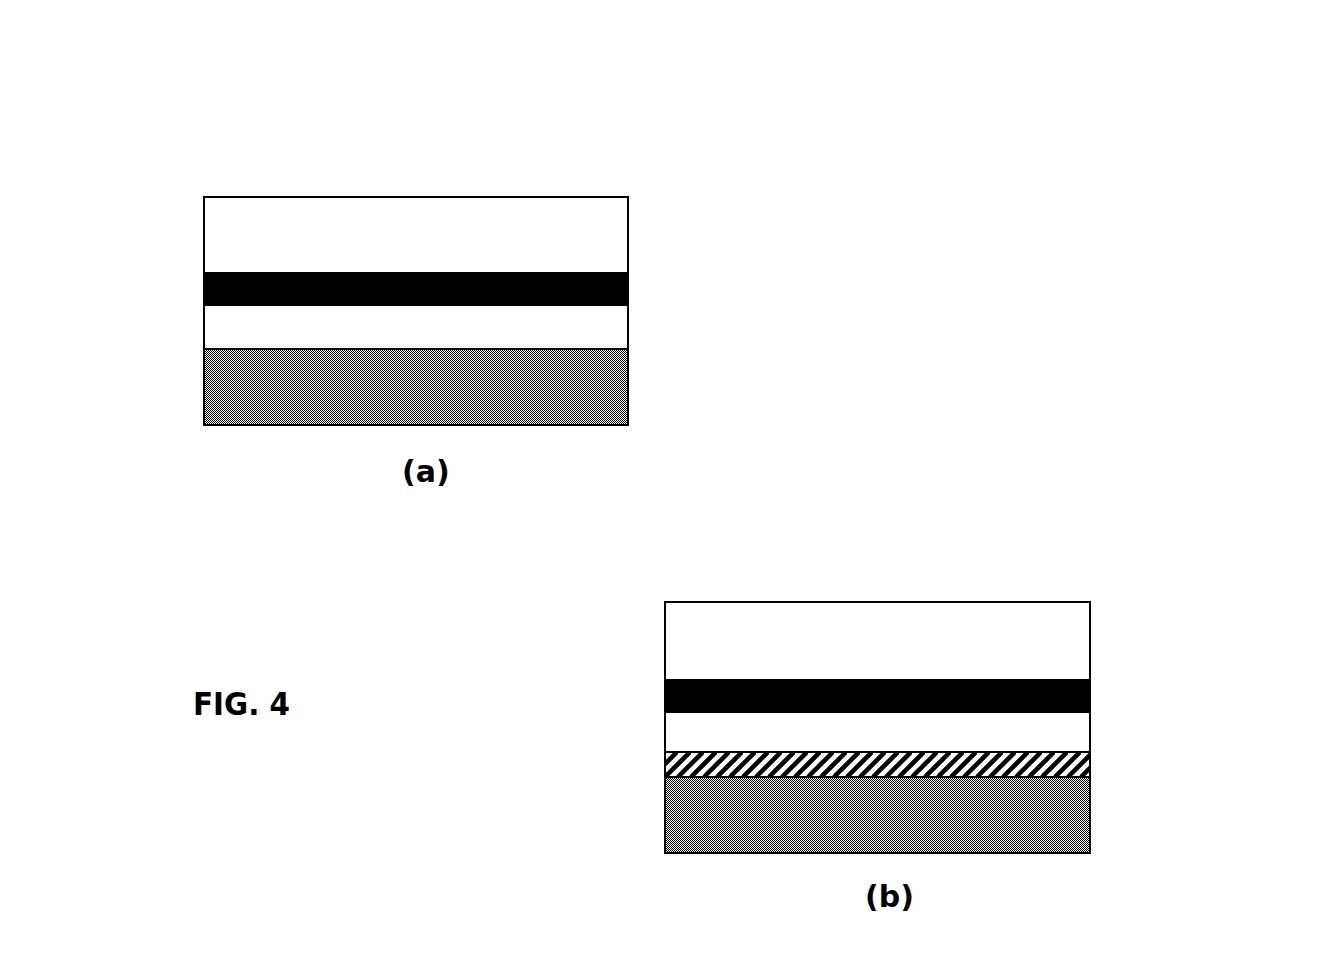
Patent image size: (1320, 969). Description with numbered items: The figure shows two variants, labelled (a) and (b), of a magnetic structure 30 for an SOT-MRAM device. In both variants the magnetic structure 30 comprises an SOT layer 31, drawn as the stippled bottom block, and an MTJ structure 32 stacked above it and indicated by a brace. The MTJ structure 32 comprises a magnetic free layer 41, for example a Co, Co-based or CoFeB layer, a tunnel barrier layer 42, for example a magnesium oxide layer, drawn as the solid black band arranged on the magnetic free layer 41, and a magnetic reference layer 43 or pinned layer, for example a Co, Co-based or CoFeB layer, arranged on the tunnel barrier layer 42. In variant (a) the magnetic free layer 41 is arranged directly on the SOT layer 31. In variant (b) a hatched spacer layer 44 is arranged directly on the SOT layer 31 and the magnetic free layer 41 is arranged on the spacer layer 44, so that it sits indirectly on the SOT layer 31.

The magnetic structure 30 is at (382, 144).
The SOT layer 31 is at (204, 393).
The MTJ structure 32 is at (743, 158).
The magnetic free layer 41 is at (628, 328).
The tunnel barrier layer 42 is at (628, 285).
The magnetic reference layer 43 is at (628, 220).
The spacer layer 44 is at (1090, 777).